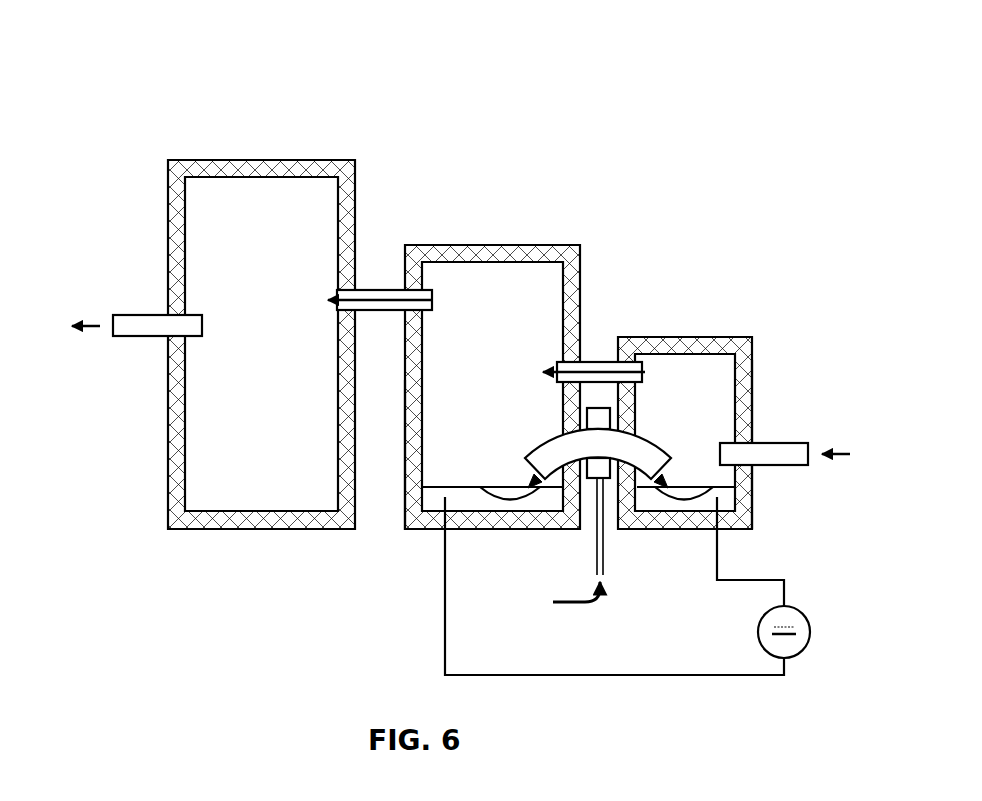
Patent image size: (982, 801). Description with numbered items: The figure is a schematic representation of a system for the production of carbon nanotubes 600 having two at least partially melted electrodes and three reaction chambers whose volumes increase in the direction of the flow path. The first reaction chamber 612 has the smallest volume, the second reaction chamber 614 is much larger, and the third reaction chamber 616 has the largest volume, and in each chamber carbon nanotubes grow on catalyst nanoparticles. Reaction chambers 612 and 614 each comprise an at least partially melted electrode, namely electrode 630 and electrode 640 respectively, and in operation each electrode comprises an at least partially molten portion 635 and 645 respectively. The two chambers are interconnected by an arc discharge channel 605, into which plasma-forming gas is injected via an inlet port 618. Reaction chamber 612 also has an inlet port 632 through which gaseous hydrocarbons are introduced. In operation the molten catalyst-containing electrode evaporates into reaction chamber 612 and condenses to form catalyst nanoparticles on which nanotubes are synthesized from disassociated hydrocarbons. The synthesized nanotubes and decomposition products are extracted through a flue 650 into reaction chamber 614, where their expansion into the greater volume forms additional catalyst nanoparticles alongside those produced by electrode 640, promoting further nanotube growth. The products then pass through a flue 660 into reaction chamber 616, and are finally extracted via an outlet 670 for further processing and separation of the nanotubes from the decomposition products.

The system for the production of nanotubes 600 is at (207, 97).
The third reaction chamber 616 is at (205, 228).
The outlet 670 is at (127, 313).
The flue 660 is at (380, 287).
The second reaction chamber 614 is at (510, 302).
The at least partially melted electrode 630 is at (410, 505).
The at least partially molten portion 635 is at (493, 537).
The first reaction chamber 612 is at (735, 360).
The at least partially molten portion 645 is at (760, 425).
The arc discharge channel 605 is at (655, 432).
The flue 650 is at (595, 357).
The inlet port 632 is at (775, 432).
The inlet port 618 is at (598, 558).
The at least partially melted electrode 640 is at (737, 533).